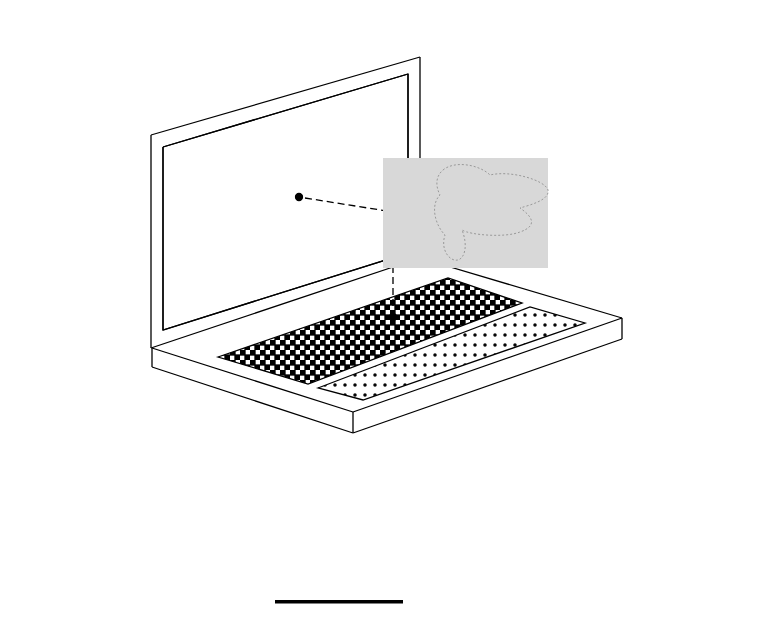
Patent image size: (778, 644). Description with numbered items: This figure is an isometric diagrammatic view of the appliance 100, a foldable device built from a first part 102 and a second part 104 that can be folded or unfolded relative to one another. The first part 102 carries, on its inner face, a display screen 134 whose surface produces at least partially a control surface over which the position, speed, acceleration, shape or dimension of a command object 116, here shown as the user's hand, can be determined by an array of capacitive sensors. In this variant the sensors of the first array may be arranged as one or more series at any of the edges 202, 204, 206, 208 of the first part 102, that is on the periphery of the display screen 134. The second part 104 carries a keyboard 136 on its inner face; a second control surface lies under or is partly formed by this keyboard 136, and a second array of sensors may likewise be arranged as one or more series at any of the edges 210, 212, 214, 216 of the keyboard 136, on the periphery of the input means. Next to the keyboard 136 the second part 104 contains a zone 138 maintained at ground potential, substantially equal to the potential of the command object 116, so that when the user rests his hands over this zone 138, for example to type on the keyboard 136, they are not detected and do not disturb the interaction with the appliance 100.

The appliance 100 is at (668, 496).
The first part 102 is at (118, 118).
The second part 104 is at (342, 460).
The command object 116 is at (504, 158).
The display screen 134 is at (323, 123).
The keyboard 136 is at (273, 375).
The zone maintained at ground potential 138 is at (538, 315).
The edge of the first part 202 is at (240, 112).
The edge of the first part 204 is at (232, 312).
The edge of the first part 206 is at (415, 97).
The edge of the first part 208 is at (160, 218).
The edge of the input means 210 is at (345, 297).
The edge of the input means 212 is at (457, 328).
The edge of the input means 214 is at (497, 285).
The edge of the input means 216 is at (225, 358).